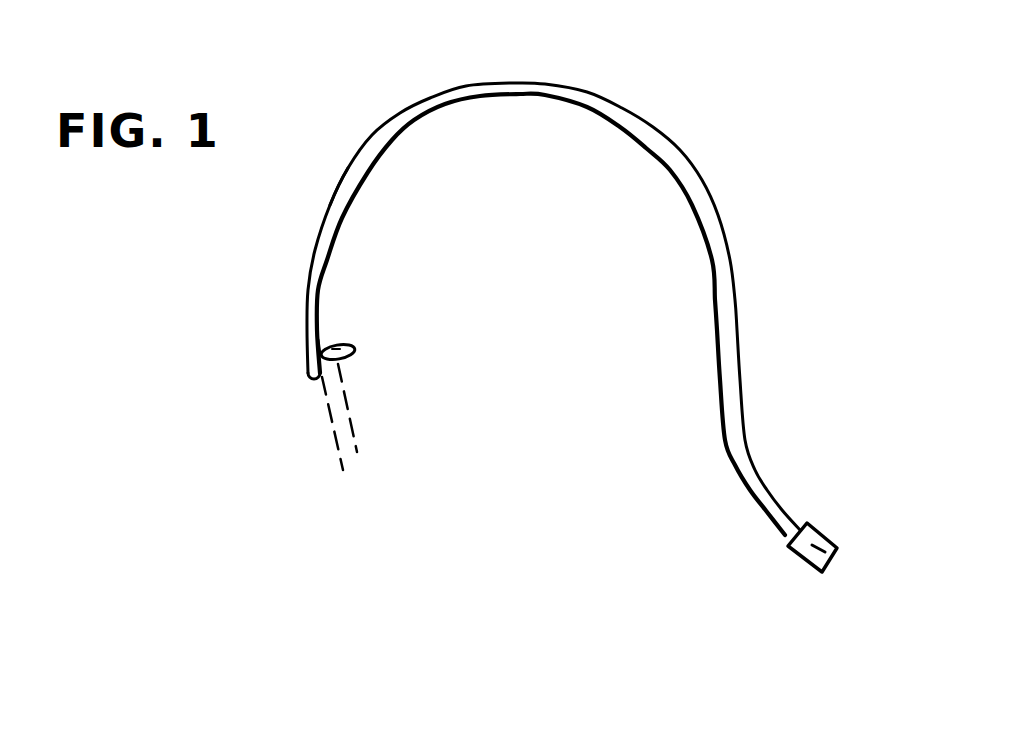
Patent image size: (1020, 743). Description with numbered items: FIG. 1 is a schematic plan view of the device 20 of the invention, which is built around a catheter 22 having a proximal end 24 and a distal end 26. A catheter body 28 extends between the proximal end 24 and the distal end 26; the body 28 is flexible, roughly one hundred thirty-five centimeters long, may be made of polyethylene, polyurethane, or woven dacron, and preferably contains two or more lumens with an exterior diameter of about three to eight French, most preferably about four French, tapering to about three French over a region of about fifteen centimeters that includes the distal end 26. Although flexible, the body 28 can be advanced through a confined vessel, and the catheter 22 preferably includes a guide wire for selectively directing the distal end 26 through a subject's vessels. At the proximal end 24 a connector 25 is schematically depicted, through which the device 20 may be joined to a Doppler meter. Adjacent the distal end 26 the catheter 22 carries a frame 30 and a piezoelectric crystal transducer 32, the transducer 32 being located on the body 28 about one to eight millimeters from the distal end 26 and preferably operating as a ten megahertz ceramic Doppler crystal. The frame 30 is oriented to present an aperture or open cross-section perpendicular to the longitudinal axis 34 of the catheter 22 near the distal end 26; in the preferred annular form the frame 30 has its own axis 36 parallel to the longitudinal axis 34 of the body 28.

The device 20 is at (755, 112).
The catheter 22 is at (600, 155).
The proximal end 24 is at (785, 538).
The connector 25 is at (818, 547).
The distal end 26 is at (307, 362).
The catheter body 28 is at (362, 175).
The frame 30 is at (355, 348).
The piezoelectric crystal transducer 32 is at (320, 348).
The longitudinal axis 34 is at (337, 444).
The axis 36 is at (352, 442).